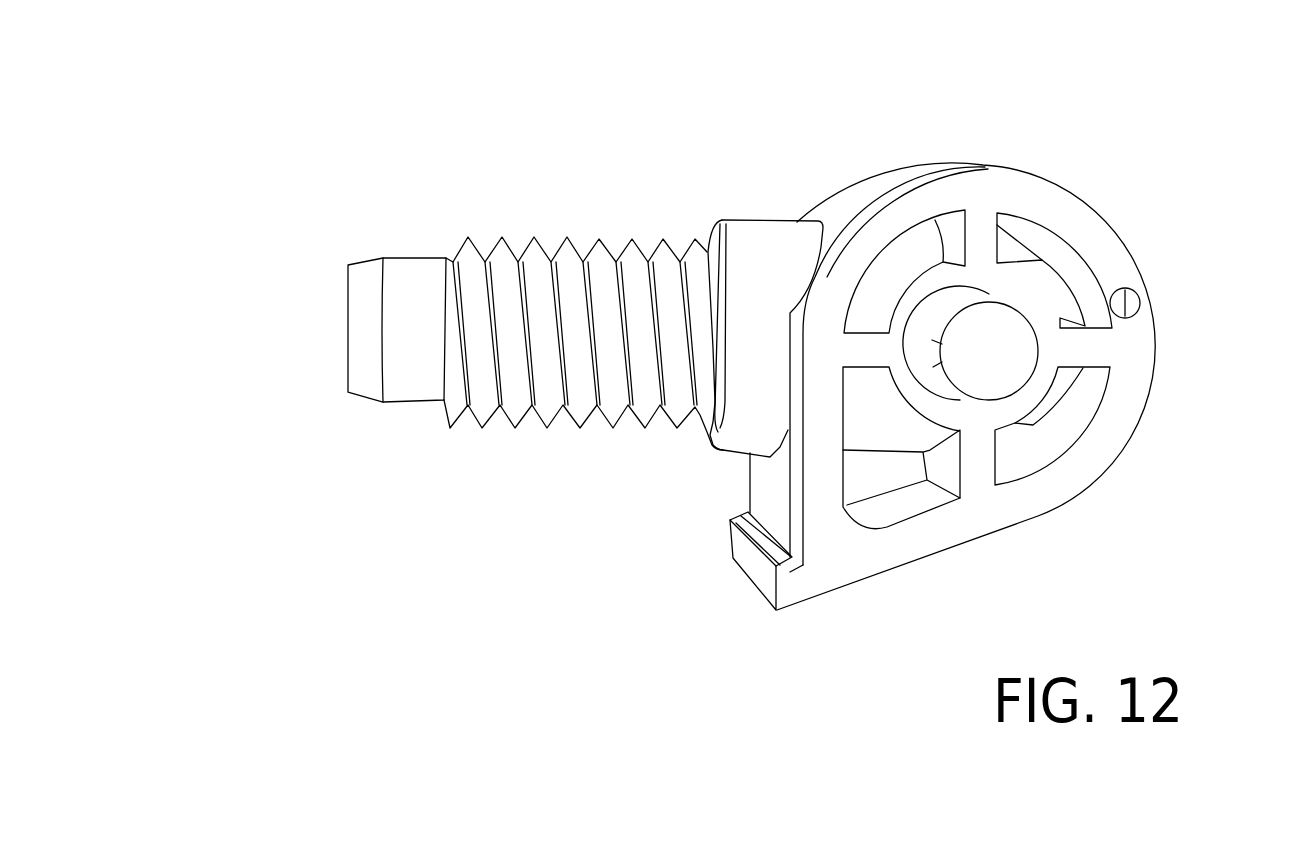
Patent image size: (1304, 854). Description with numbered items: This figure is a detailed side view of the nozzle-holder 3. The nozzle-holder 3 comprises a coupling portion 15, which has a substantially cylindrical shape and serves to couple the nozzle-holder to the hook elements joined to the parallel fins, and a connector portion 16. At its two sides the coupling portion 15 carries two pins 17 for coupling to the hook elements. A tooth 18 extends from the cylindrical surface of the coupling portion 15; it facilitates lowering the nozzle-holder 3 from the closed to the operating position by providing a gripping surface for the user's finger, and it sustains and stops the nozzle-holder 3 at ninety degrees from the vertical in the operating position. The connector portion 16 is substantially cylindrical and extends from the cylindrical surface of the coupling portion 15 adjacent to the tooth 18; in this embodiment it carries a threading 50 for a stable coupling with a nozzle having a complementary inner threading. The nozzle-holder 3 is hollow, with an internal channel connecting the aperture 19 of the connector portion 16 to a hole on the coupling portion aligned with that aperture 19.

The nozzle-holder 3 is at (717, 369).
The coupling portion 15 is at (1055, 180).
The connector portion 16 is at (583, 314).
The pin 17 is at (1018, 312).
The tooth 18 is at (753, 558).
The aperture 19 is at (322, 321).
The threading 50 is at (492, 412).